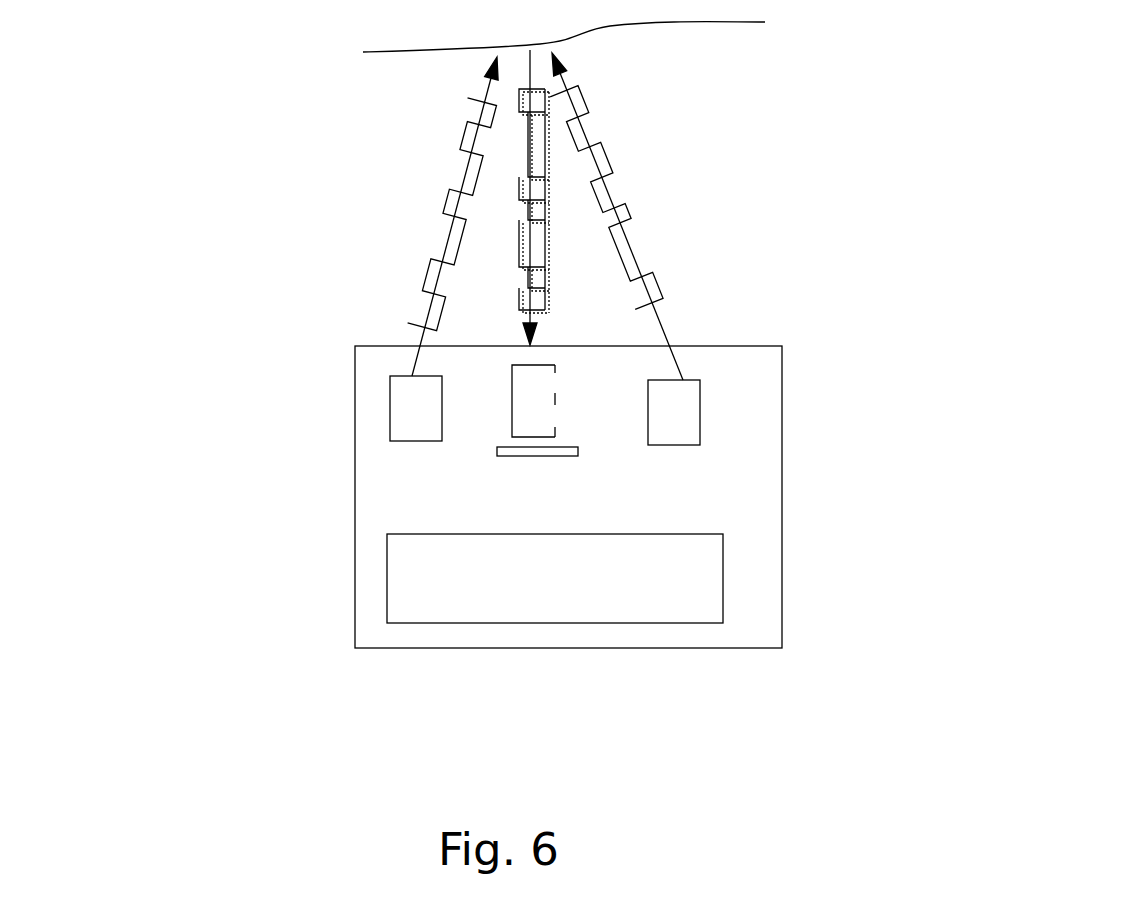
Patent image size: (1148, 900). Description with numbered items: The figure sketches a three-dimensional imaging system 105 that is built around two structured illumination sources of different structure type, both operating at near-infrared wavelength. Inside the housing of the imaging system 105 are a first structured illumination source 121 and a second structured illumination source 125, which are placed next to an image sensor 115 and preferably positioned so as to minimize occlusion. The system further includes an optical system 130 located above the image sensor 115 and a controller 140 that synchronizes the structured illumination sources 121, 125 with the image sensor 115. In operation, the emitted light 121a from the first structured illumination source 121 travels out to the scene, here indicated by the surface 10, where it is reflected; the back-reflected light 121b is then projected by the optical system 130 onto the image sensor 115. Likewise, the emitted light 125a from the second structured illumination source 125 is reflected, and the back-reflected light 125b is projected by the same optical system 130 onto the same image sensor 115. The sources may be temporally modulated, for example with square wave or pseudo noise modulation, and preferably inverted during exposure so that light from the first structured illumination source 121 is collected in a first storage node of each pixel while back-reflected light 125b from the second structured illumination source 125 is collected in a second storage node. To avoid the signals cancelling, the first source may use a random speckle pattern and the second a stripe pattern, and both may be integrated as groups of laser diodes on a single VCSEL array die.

The skin surface 10 is at (620, 40).
The imaging system 105 is at (573, 673).
The image sensor 115 is at (521, 471).
The first structured illumination source 121 is at (722, 412).
The emitted light 121a is at (642, 216).
The back-reflected light 121b is at (572, 205).
The second structured illumination source 125 is at (368, 410).
The emitted light 125a is at (431, 216).
The back-reflected light 125b is at (568, 197).
The optical system 130 is at (579, 402).
The controller 140 is at (546, 643).